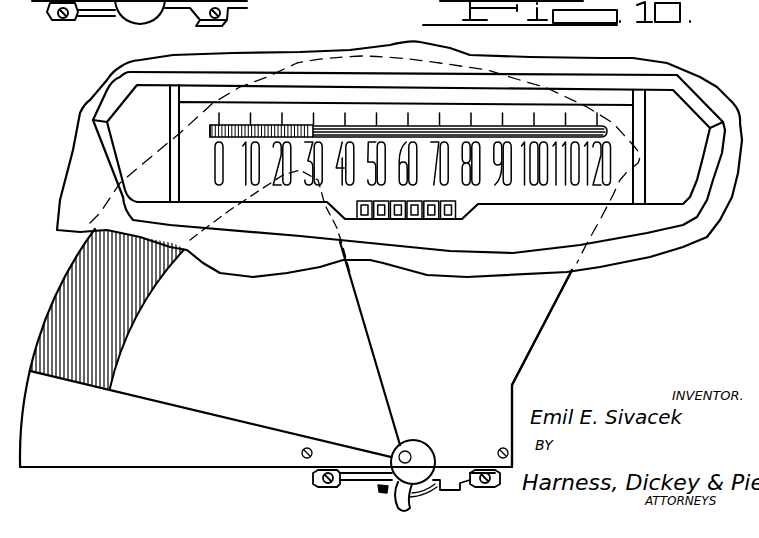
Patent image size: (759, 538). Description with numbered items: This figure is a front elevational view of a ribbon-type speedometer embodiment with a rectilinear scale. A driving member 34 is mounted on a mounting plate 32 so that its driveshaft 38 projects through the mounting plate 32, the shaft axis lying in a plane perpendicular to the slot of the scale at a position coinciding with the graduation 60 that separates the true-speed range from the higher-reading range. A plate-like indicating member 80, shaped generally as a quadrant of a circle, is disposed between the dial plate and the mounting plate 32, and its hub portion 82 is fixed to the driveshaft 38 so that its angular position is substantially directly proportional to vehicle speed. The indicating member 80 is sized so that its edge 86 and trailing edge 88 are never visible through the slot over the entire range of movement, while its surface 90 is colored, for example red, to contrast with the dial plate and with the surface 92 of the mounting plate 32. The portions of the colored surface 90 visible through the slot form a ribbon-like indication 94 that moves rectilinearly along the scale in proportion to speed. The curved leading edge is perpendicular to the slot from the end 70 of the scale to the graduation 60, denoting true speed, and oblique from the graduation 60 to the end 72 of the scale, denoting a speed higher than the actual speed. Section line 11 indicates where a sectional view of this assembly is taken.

The section line 11- 11 is at (250, 66).
The mounting plate 32 is at (520, 330).
The driving member 34 is at (343, 54).
The driveshaft 38 is at (411, 451).
The graduation 60 is at (408, 123).
The end of the scale 70 is at (205, 128).
The end of the scale 72 is at (607, 130).
The indicating member 80 is at (389, 344).
The hub portion 82 is at (428, 450).
The edge 86 is at (67, 270).
The trailing edge 88 is at (157, 403).
The surface of the indicating member 90 is at (272, 386).
The surface of the mounting plate 92 is at (90, 467).
The ribbon-like indication 94 is at (291, 125).